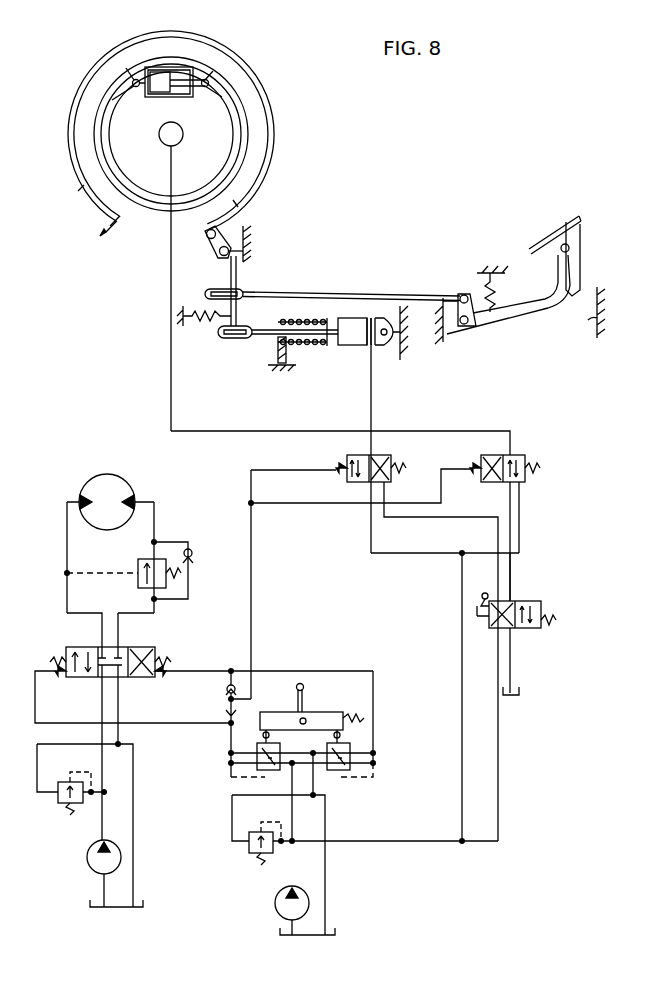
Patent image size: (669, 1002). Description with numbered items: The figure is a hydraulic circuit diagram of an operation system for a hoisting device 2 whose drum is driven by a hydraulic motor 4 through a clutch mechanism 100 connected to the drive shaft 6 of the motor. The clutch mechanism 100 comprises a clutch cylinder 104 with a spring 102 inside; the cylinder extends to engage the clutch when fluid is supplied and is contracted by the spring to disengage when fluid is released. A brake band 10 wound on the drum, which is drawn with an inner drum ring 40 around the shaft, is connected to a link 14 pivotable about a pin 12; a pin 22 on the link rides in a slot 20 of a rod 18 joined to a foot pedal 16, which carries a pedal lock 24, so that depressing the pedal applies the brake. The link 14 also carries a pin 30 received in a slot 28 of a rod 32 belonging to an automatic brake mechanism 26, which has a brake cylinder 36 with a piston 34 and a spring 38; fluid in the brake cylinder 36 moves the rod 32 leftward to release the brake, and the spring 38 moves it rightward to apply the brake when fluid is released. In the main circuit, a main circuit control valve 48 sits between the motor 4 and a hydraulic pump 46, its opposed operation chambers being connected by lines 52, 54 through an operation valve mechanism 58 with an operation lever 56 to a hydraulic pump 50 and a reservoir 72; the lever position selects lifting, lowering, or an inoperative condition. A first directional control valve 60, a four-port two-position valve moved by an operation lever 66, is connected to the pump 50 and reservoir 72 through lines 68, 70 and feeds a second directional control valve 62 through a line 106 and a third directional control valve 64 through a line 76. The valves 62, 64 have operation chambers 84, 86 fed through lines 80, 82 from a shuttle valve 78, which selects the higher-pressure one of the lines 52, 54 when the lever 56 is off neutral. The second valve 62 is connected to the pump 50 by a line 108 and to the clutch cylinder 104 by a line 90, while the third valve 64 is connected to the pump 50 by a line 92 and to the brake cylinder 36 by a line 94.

The hoisting device 2 is at (246, 97).
The hydraulic motor 4 is at (90, 478).
The drive shaft 6 is at (159, 137).
The brake band 10 is at (268, 150).
The pin 12 is at (230, 233).
The link 14 is at (218, 252).
The foot pedal 16 is at (526, 305).
The rod 18 is at (306, 292).
The slot 20 is at (236, 286).
The pin 22 is at (212, 288).
The pedal lock 24 is at (580, 250).
The automatic brake mechanism 26 is at (278, 360).
The slot 28 is at (233, 338).
The pin 30 is at (220, 334).
The rod 32 is at (266, 342).
The piston 34 is at (371, 317).
The brake cylinder 36 is at (352, 346).
The spring 38 is at (296, 345).
The drum ring 40 is at (242, 124).
The hydraulic pump 46 is at (87, 857).
The main circuit control valve 48 is at (140, 650).
The hydraulic pump 50 is at (275, 903).
The line 52 is at (316, 671).
The line 54 is at (216, 724).
The operation lever 56 is at (296, 688).
The operation valve mechanism 58 is at (328, 712).
The first directional control valve 60 is at (539, 602).
The second directional control valve 62 is at (520, 456).
The third directional control valve 64 is at (382, 457).
The operation lever 66 is at (481, 598).
The line 68 is at (498, 775).
The line 70 is at (513, 652).
The reservoir 72 is at (519, 693).
The line 76 is at (465, 518).
The shuttle valve 78 is at (225, 698).
The line 80 is at (330, 505).
The line 82 is at (251, 470).
The operation chamber 84 is at (468, 466).
The operation chamber 86 is at (338, 460).
The line 90 is at (440, 431).
The line 92 is at (397, 553).
The line 94 is at (372, 402).
The clutch mechanism 100 is at (171, 63).
The spring 102 is at (177, 95).
The clutch cylinder 104 is at (148, 66).
The line 106 is at (511, 576).
The line 108 is at (520, 504).